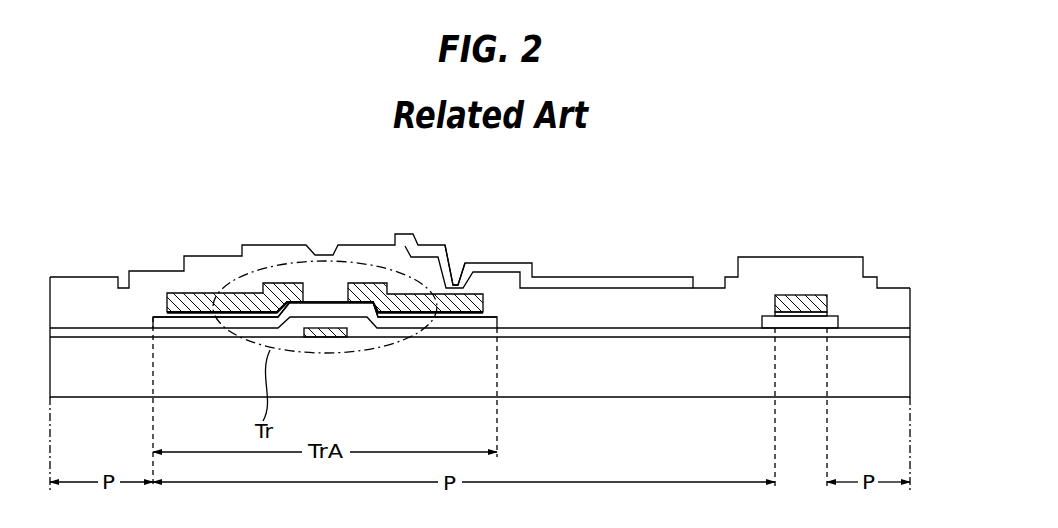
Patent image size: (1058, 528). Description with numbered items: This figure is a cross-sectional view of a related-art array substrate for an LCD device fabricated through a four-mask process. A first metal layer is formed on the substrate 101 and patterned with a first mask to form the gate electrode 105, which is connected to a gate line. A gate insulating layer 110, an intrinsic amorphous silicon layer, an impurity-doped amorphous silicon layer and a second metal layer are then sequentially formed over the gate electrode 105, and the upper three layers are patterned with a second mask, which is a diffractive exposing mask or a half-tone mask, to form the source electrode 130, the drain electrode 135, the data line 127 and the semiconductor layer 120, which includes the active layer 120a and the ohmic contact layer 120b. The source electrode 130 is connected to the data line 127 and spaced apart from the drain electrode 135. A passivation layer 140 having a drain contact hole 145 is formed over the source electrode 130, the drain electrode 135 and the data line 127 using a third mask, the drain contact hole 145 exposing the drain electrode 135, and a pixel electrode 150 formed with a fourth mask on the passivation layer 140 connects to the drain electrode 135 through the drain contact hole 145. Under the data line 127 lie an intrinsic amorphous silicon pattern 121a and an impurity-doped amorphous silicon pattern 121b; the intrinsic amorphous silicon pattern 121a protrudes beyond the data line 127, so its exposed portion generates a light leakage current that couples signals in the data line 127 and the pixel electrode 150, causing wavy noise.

The substrate 101 is at (900, 377).
The gate electrode 105 is at (323, 337).
The gate insulating layer 110 is at (406, 331).
The semiconductor layer 120 is at (307, 193).
The active layer 120a is at (274, 298).
The ohmic contact layer 120b is at (300, 300).
The intrinsic amorphous silicon pattern 121a is at (837, 318).
The impurity-doped amorphous silicon pattern 121b is at (818, 312).
The data line 127 is at (791, 295).
The source electrode 130 is at (195, 296).
The drain electrode 135 is at (412, 302).
The passivation layer 140 is at (363, 252).
The drain contact hole 145 is at (455, 281).
The pixel electrode 150 is at (497, 264).